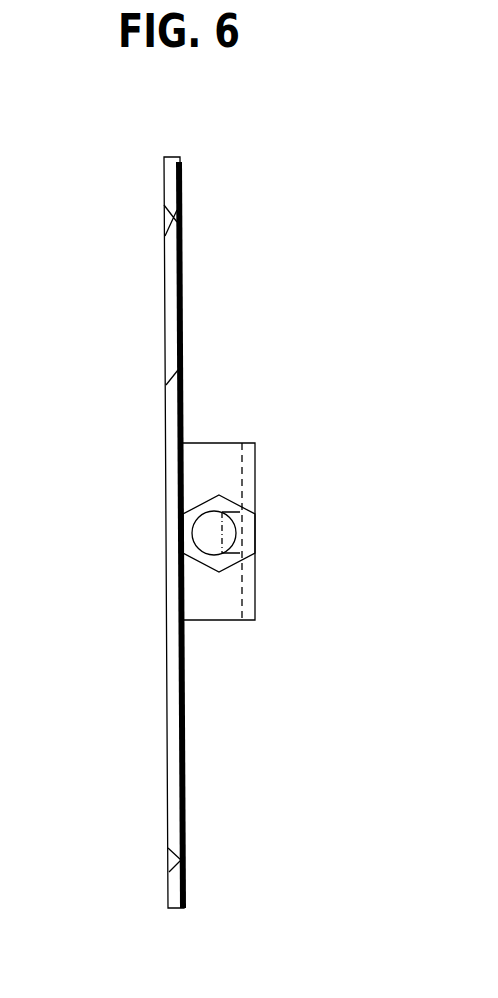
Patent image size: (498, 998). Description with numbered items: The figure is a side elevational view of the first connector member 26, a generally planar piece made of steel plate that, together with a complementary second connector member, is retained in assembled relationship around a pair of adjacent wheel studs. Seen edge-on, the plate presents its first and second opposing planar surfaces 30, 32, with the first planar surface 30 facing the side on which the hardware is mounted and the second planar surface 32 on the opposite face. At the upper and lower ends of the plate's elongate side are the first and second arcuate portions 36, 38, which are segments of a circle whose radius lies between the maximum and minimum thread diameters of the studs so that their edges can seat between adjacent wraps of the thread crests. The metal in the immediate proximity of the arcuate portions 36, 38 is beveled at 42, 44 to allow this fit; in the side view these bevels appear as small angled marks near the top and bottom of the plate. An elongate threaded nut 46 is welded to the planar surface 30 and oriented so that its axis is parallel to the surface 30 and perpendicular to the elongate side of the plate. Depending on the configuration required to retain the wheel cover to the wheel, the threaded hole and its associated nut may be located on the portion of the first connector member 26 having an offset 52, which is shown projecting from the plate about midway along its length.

The first connector member 26 is at (184, 179).
The first planar surface 30 is at (190, 670).
The second planar surface 32 is at (161, 470).
The first arcuate portion 36 is at (171, 312).
The second arcuate portion 38 is at (171, 760).
The bevel 42 is at (165, 236).
The bevel 44 is at (172, 851).
The elongate threaded nut 46 is at (235, 512).
The offset 52 is at (217, 621).